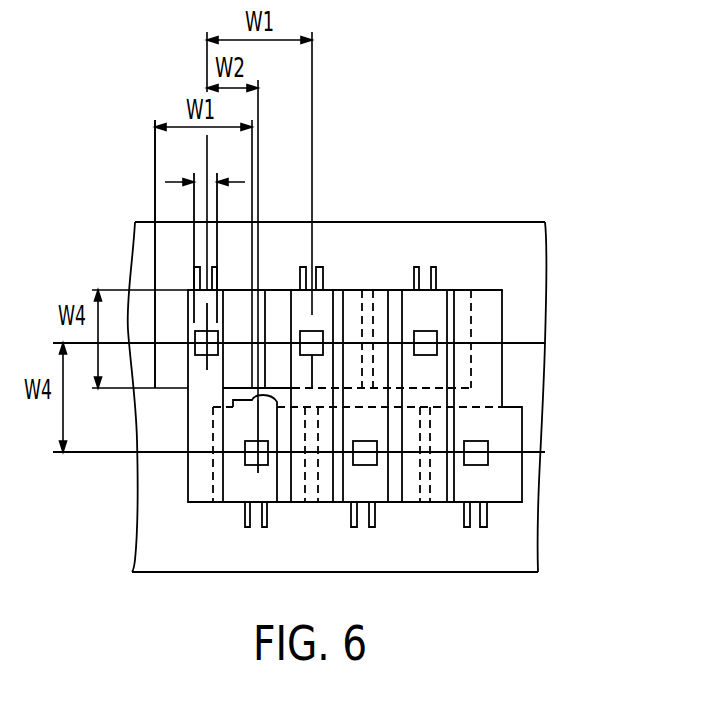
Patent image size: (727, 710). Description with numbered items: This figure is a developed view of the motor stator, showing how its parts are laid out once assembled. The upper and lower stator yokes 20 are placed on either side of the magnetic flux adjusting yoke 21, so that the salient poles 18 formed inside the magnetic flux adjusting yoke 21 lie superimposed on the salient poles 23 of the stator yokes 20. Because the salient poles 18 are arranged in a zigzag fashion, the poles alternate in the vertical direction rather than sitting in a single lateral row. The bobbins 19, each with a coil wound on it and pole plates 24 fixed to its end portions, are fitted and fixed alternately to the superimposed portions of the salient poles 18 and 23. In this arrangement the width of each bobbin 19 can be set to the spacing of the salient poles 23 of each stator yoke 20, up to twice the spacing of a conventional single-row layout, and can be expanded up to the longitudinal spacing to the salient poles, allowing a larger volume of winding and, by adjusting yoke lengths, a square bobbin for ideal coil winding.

The salient pole 18 is at (428, 346).
The bobbin 19 is at (168, 303).
The stator yoke 20 is at (523, 263).
The magnetic flux adjusting yoke 21 is at (523, 382).
The salient pole 23 is at (422, 338).
The pole plate 24 is at (485, 293).